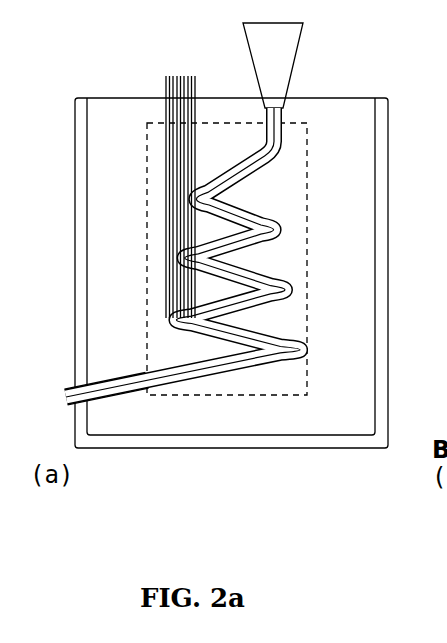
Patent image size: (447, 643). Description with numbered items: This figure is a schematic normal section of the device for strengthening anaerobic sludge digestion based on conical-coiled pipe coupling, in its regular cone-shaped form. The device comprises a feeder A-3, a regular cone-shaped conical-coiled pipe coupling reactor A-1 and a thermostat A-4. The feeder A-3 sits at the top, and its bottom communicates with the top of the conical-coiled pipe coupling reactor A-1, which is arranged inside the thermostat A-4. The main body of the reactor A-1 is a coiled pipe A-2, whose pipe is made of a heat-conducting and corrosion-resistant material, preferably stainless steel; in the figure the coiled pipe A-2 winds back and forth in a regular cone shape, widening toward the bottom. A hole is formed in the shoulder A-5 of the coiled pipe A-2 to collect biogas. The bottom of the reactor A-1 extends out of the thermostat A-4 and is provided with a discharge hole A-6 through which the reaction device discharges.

The regular cone-shaped conical-coiled pipe coupling reactor A-1 is at (146, 270).
The coiled pipe A-2 is at (262, 272).
The feeder A-3 is at (289, 38).
The thermostat A-4 is at (101, 96).
The shoulder of coiled pipe A-5 is at (188, 76).
The discharge hole A-6 is at (73, 398).